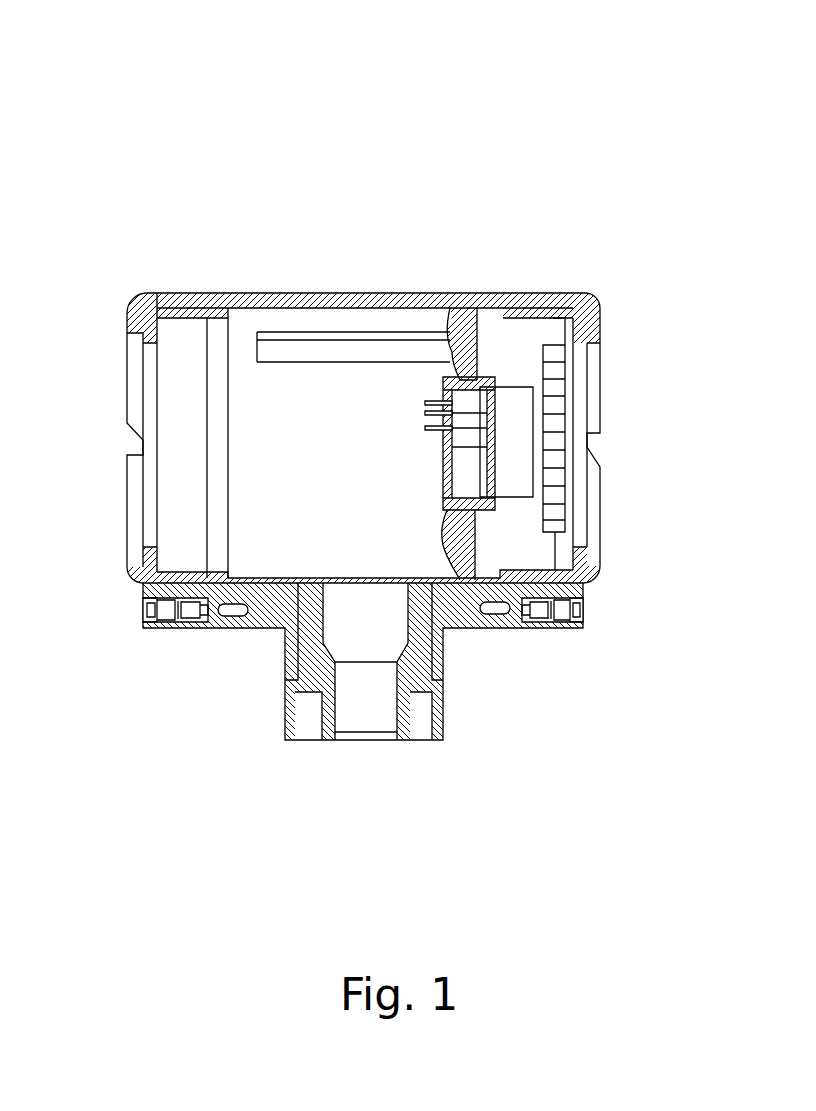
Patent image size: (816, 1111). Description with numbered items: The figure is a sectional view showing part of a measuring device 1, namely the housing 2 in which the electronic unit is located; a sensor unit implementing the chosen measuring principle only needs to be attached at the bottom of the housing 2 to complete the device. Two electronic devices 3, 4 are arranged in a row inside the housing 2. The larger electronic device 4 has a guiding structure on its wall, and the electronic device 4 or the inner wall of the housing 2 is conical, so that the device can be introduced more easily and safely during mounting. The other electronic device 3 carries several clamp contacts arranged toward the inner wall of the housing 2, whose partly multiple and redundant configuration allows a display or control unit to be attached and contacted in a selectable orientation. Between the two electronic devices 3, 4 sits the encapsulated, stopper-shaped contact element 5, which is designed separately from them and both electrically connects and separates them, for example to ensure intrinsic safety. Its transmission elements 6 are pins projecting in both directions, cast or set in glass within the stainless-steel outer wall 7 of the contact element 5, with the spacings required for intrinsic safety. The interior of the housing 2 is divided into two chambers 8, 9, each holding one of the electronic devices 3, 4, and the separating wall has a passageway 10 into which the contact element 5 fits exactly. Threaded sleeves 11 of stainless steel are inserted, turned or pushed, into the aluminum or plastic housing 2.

The measuring device 1 is at (620, 212).
The housing 2 is at (423, 305).
The electronic device 3 is at (560, 332).
The electronic device 4 is at (290, 332).
The contact element 5 is at (472, 487).
The transmission elements 6 is at (497, 397).
The outer wall 7 is at (467, 393).
The chamber 8 is at (567, 374).
The chamber 9 is at (360, 312).
The passageway 10 is at (483, 507).
The threaded sleeves 11 is at (143, 622).